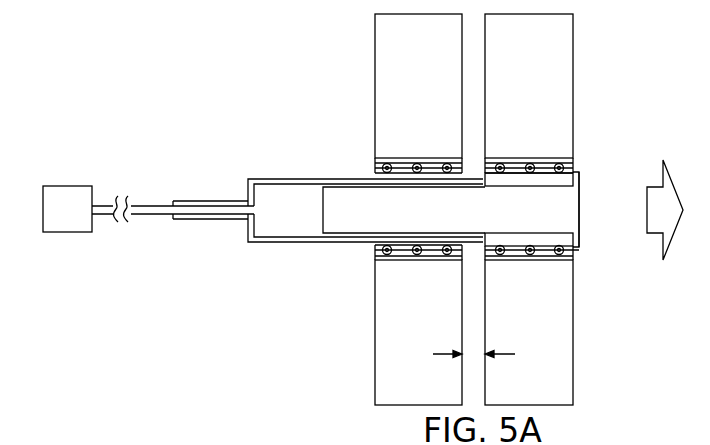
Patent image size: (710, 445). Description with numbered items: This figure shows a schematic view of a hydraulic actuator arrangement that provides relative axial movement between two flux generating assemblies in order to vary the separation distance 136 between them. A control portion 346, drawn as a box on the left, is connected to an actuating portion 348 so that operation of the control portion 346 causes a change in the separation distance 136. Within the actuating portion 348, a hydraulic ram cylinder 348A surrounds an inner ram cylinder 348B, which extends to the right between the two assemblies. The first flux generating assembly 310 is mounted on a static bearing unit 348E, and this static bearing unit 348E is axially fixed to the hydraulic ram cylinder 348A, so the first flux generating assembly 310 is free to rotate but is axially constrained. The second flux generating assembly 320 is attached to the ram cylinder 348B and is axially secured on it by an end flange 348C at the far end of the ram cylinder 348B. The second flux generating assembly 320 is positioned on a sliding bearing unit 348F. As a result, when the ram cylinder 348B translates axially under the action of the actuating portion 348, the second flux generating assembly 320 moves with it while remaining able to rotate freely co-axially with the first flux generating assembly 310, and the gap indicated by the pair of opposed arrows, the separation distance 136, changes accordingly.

The control portion 346 is at (67, 233).
The actuating portion 348 is at (386, 137).
The hydraulic ram cylinder 348A is at (267, 177).
The ram cylinder 348B is at (340, 200).
The end flange 348C is at (575, 255).
The static bearing unit 348E is at (417, 256).
The sliding bearing unit 348F is at (532, 257).
The first flux generating assembly 310 is at (402, 14).
The second flux generating assembly 320 is at (517, 14).
The separation distance 136 is at (476, 357).